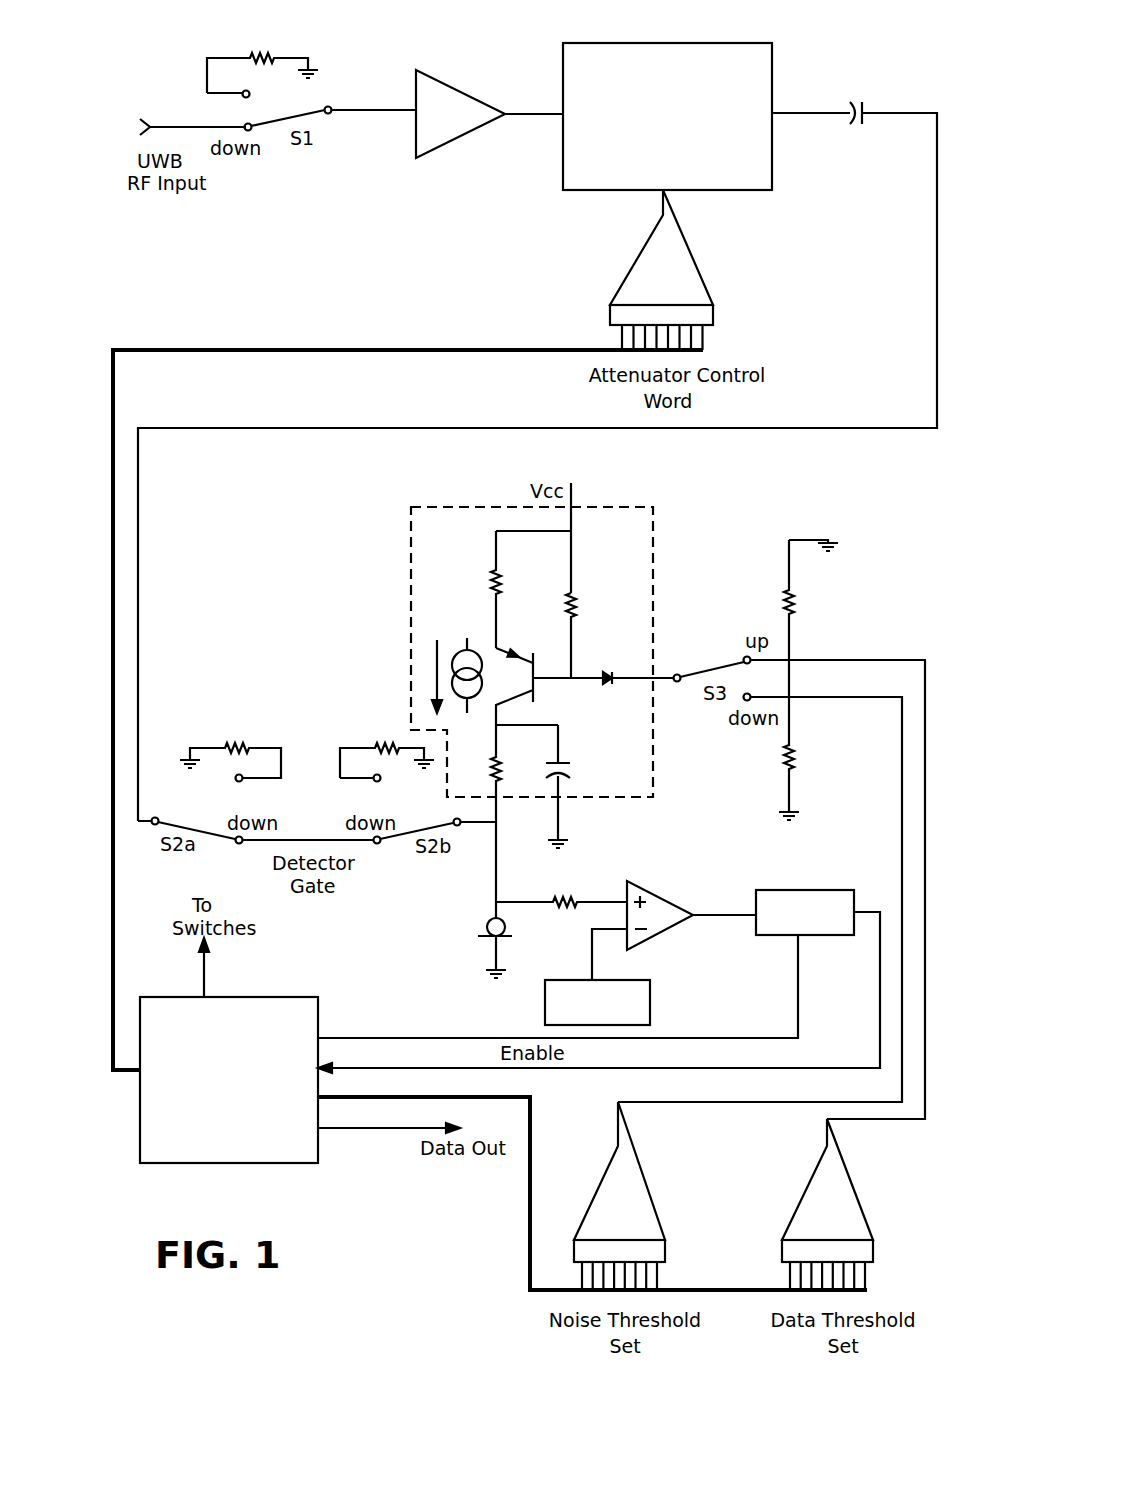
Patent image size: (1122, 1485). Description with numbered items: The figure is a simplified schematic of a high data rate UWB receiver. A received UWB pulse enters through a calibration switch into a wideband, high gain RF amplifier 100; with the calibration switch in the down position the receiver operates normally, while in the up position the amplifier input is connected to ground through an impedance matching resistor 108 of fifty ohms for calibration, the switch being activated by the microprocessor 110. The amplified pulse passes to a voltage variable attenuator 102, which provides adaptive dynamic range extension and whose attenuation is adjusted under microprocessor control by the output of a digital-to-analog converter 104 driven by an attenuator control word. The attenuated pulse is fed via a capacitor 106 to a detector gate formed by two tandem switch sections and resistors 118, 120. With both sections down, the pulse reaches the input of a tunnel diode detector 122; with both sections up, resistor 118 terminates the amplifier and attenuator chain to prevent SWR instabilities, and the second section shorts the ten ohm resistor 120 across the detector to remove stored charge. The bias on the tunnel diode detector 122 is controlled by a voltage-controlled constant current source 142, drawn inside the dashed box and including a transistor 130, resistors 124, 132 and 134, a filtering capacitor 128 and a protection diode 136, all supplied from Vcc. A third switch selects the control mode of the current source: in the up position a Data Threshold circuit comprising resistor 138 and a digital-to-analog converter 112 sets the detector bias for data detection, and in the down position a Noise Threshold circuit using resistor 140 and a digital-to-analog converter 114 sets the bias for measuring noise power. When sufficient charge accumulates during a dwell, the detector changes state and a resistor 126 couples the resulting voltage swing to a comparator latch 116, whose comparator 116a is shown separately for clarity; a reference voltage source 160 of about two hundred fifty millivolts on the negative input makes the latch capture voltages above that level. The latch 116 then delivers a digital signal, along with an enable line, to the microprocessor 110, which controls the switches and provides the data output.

The RF amplifier 100 is at (459, 86).
The voltage variable attenuator 102 is at (748, 45).
The digital-to-analog converter 104 is at (686, 252).
The capacitor 106 is at (866, 108).
The impedance matching resistor 108 is at (248, 46).
The microprocessor 110 is at (320, 1005).
The digital-to-analog converter 112 is at (840, 1170).
The digital-to-analog converter 114 is at (632, 1172).
The comparator latch 116 is at (822, 890).
The comparator 116a is at (658, 893).
The resistor 118 is at (222, 740).
The resistor 120 is at (380, 746).
The tunnel diode detector 122 is at (488, 921).
The resistor 124 is at (503, 768).
The resistor 126 is at (556, 898).
The filtering capacitor 128 is at (566, 762).
The transistor 130 is at (538, 688).
The resistor 132 is at (491, 586).
The resistor 134 is at (565, 609).
The protection diode 136 is at (603, 670).
The resistor 138 is at (785, 606).
The resistor 140 is at (785, 762).
The voltage-controlled constant current source 142 is at (411, 573).
The reference voltage source 160 is at (640, 980).